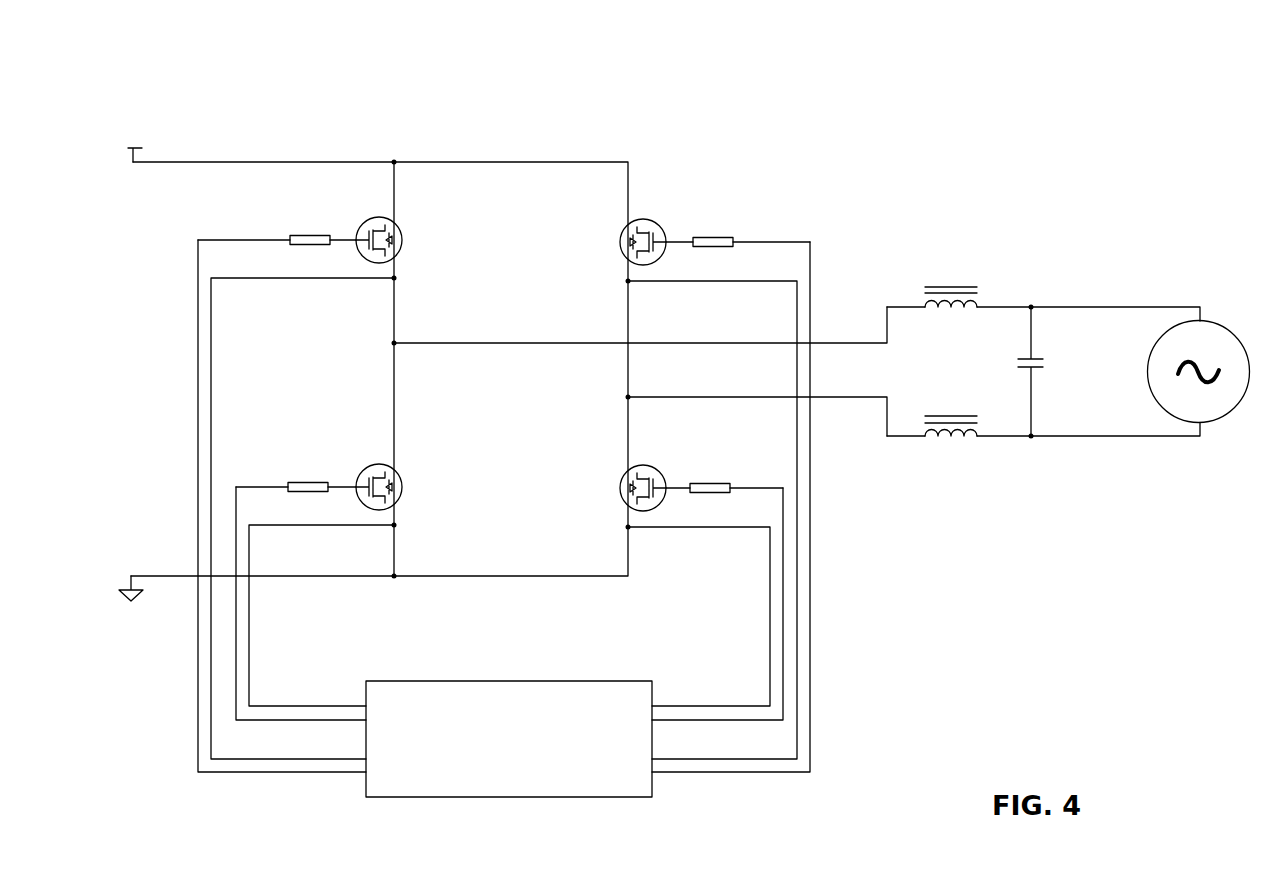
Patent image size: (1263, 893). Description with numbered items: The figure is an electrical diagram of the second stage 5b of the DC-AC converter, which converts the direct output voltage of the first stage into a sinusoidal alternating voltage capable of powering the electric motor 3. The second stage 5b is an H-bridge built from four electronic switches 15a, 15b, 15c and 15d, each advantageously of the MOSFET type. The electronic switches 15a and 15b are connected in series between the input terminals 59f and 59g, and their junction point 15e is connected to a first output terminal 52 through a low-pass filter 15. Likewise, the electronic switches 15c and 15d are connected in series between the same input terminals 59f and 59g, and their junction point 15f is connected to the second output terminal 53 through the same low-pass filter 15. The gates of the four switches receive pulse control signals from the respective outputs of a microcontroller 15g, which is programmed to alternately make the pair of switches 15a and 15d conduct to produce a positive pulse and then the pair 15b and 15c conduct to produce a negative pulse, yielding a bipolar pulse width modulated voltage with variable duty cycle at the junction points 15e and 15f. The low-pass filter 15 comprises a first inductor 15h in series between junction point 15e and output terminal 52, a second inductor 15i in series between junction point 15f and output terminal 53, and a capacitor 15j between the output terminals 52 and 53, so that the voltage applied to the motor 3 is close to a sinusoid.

The second stage 5b is at (709, 169).
The input terminal 59f is at (130, 168).
The input terminal 59g is at (125, 602).
The low-pass filter 15 is at (1043, 394).
The electronic switch 15a is at (404, 237).
The electronic switch 15b is at (404, 485).
The electronic switch 15c is at (618, 244).
The electronic switch 15d is at (620, 486).
The junction point 15e is at (392, 343).
The junction point 15f is at (626, 397).
The microcontroller 15g is at (512, 750).
The first inductor 15h is at (946, 284).
The second inductor 15i is at (938, 440).
The capacitor 15j is at (1016, 459).
The first output terminal 52 is at (1098, 303).
The second output terminal 53 is at (1095, 440).
The electric motor 3 is at (1213, 328).